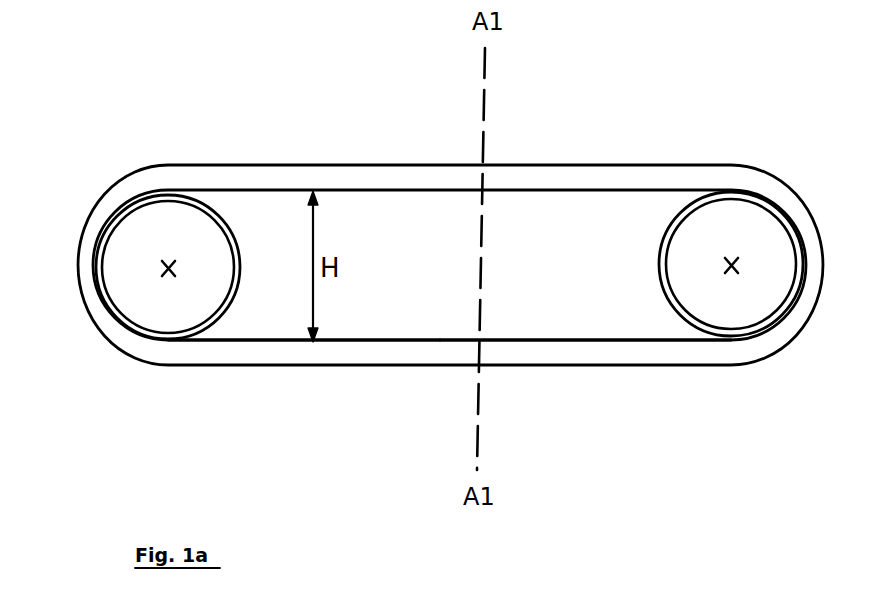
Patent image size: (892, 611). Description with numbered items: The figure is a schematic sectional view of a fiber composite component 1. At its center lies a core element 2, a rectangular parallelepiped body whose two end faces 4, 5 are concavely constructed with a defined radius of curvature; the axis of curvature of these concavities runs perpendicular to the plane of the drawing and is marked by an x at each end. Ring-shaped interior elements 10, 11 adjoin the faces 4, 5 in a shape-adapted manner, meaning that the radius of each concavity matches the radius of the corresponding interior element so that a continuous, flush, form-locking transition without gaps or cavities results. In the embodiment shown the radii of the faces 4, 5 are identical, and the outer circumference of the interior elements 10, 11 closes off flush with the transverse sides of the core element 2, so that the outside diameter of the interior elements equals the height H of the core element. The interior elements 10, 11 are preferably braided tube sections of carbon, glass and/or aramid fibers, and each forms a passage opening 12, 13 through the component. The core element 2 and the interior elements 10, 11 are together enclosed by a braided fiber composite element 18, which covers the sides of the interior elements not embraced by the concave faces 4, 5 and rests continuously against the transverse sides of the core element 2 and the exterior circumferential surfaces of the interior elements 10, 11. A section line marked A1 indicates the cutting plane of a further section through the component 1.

The fiber composite component 1 is at (180, 422).
The core element 2 is at (571, 290).
The face 4 is at (226, 332).
The face 5 is at (668, 325).
The interior element 10 is at (239, 241).
The interior element 11 is at (660, 241).
The passage opening 12 is at (178, 319).
The passage opening 13 is at (745, 315).
The braided fiber composite element 18 is at (623, 177).